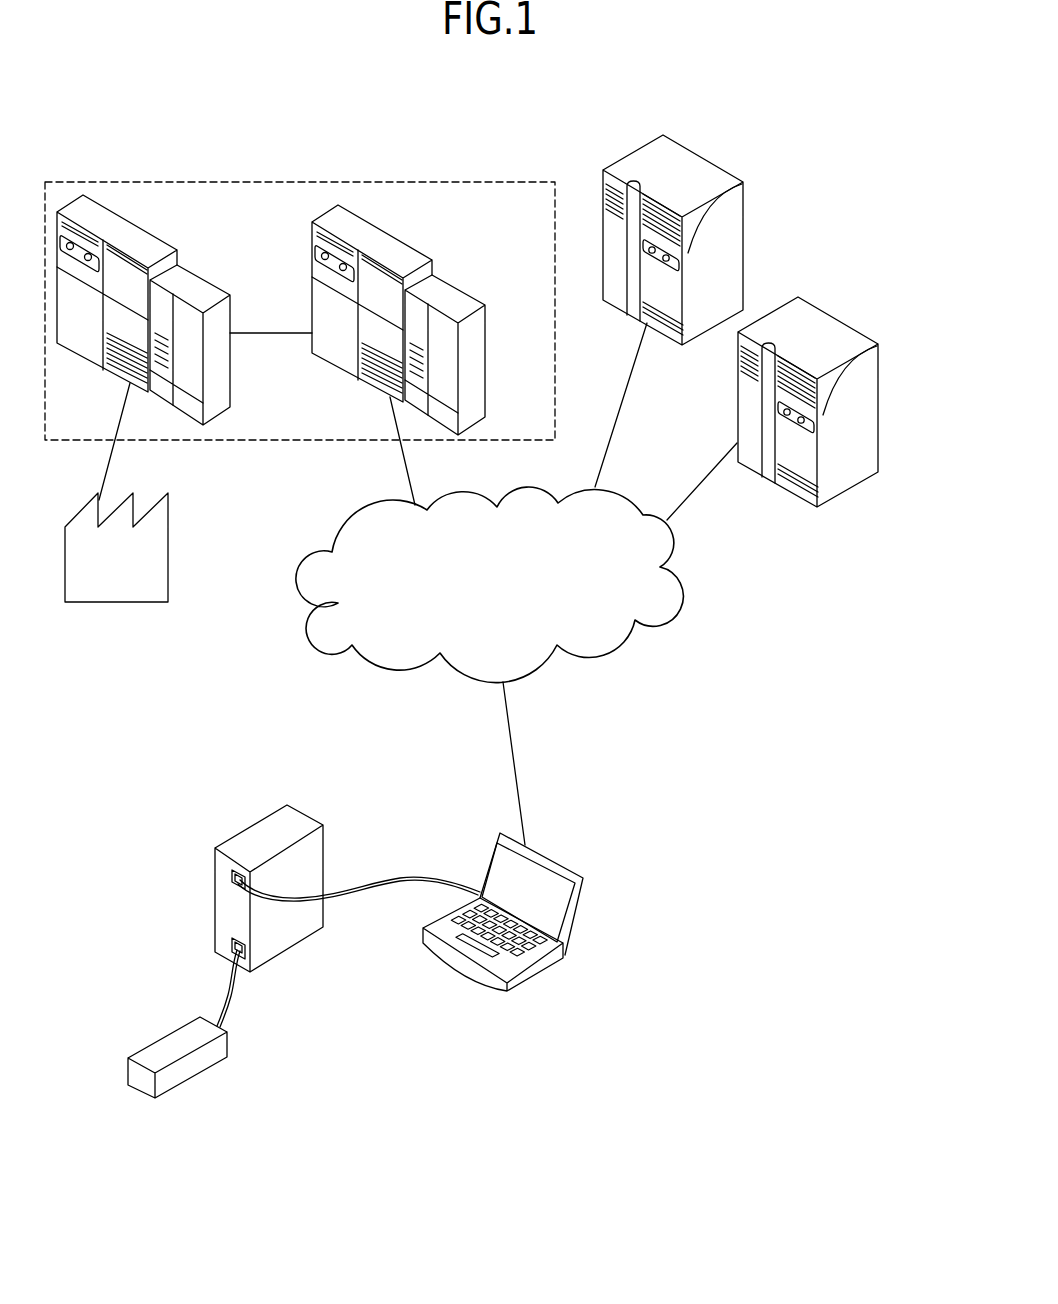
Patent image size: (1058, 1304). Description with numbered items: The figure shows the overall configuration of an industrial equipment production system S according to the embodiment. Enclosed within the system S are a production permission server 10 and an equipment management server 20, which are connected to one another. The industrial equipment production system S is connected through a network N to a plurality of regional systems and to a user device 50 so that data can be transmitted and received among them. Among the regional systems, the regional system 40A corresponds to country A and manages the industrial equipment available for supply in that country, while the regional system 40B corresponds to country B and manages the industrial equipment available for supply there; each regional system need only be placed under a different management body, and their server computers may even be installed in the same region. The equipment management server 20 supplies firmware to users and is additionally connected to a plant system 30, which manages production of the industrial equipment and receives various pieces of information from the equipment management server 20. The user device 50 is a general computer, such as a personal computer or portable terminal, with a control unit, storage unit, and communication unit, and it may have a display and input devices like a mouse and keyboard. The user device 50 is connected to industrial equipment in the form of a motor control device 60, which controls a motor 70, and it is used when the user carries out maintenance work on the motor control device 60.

The industrial equipment production system S is at (518, 182).
The production permission server 10 is at (485, 315).
The equipment management server 20 is at (230, 310).
The plant system 30 is at (170, 567).
The regional system 40A is at (743, 210).
The regional system 40B is at (880, 383).
The network N is at (297, 585).
The user device 50 is at (577, 920).
The motor control device 60 is at (285, 813).
The motor 70 is at (200, 1072).